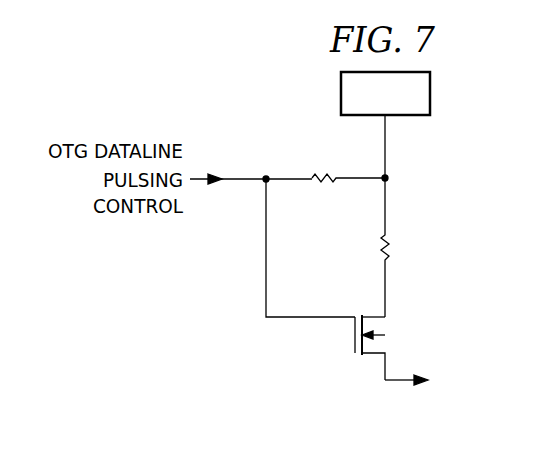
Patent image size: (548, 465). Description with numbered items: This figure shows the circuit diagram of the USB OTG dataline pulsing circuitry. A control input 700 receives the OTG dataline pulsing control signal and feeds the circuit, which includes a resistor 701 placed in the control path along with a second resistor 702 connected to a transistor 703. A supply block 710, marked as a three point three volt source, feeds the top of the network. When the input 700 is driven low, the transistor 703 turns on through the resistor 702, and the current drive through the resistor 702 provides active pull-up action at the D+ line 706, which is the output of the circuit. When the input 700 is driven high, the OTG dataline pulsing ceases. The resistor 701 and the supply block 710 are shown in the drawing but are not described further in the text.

The input 700 is at (240, 176).
The 10K resistor 701 is at (322, 183).
The resistor 702 is at (378, 256).
The transistor 703 is at (352, 343).
The D+ line 706 is at (397, 383).
The 3.3V supply 710 is at (430, 93).